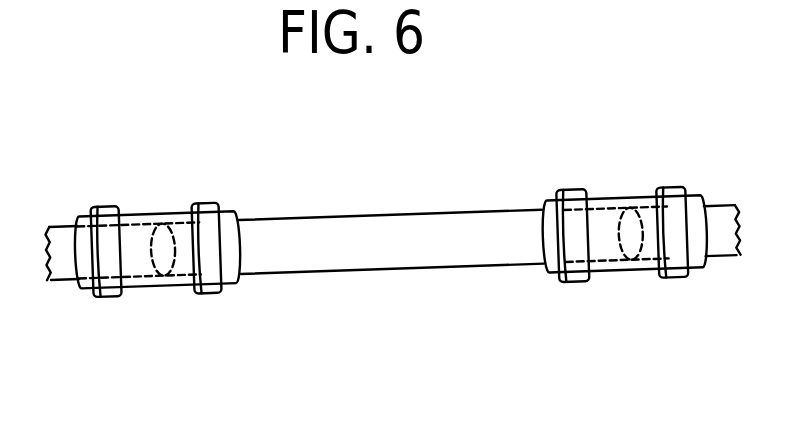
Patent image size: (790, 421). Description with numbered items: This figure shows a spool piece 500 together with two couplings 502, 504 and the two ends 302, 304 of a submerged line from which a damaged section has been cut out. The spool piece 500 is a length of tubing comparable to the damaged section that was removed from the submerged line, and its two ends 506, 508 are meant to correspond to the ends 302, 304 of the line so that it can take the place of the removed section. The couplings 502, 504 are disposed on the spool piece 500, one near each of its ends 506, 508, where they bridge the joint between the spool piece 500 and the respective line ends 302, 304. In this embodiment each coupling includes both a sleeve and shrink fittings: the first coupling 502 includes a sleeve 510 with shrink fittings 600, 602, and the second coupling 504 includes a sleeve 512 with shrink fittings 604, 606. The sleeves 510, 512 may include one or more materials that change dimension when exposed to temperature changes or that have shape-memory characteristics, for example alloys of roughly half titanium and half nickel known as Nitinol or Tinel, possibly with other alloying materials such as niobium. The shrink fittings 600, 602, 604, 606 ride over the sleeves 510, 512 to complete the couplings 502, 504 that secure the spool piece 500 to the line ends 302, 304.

The spool piece 500 is at (345, 273).
The end of submerged line 302 is at (53, 280).
The end of submerged line 304 is at (717, 253).
The coupling 502 is at (157, 221).
The coupling 504 is at (601, 223).
The end of spool piece 506 is at (165, 283).
The end of spool piece 508 is at (602, 250).
The sleeve 510 is at (160, 210).
The sleeve 512 is at (622, 198).
The shrink fitting 600 is at (100, 208).
The shrink fitting 602 is at (220, 203).
The shrink fitting 604 is at (560, 193).
The shrink fitting 606 is at (685, 191).